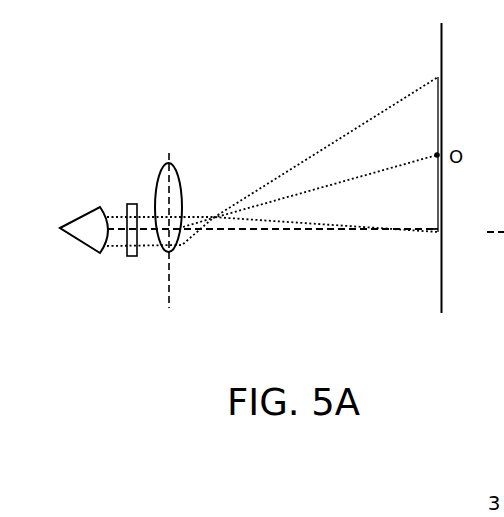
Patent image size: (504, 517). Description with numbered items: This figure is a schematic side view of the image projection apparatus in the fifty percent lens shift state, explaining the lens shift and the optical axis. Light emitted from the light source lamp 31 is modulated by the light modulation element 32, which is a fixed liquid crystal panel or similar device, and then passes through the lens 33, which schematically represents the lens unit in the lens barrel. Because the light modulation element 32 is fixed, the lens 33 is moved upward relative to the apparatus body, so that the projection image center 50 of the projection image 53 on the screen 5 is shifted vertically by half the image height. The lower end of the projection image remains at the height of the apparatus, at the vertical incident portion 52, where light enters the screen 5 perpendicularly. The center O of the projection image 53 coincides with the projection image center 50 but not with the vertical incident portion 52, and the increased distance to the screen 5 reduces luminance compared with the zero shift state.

The screen 5 is at (441, 43).
The light source lamp 31 is at (87, 246).
The light modulation element 32 is at (127, 258).
The lens 33 is at (163, 253).
The projection image center 50 is at (335, 182).
The vertical incident portion 52 is at (415, 232).
The projection image 53 is at (442, 127).